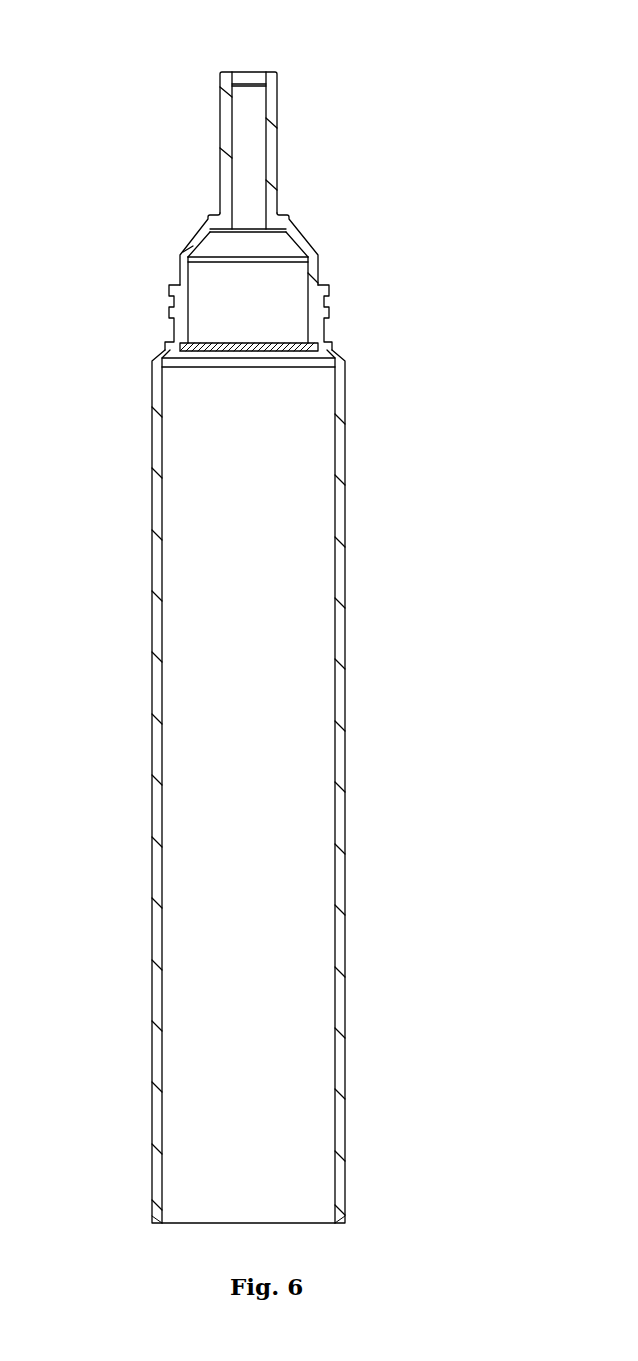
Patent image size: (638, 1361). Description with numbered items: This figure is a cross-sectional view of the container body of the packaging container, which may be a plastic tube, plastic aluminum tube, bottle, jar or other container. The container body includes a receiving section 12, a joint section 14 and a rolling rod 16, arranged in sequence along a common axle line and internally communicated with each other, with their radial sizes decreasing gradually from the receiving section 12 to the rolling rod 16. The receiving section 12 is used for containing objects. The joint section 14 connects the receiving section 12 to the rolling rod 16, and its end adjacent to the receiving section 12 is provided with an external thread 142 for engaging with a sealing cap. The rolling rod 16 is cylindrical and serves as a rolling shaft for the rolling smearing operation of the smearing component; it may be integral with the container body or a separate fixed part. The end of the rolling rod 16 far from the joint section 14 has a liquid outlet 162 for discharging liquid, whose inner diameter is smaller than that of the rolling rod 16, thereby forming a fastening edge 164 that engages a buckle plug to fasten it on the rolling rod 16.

The receiving section 12 is at (222, 455).
The joint section 14 is at (182, 275).
The external thread 142 is at (325, 285).
The rolling rod 16 is at (258, 122).
The liquid outlet 162 is at (247, 77).
The fastening edge 164 is at (266, 82).